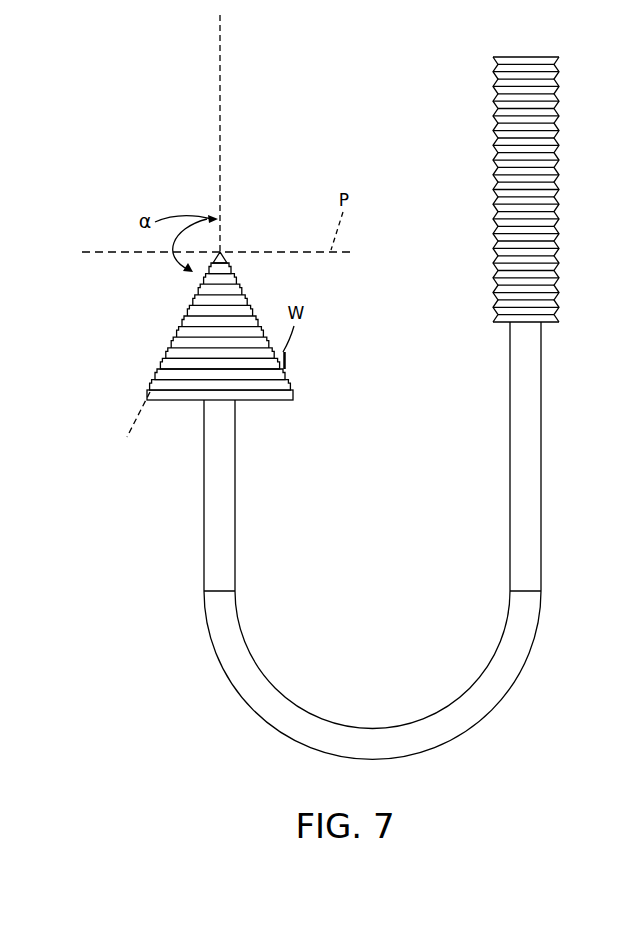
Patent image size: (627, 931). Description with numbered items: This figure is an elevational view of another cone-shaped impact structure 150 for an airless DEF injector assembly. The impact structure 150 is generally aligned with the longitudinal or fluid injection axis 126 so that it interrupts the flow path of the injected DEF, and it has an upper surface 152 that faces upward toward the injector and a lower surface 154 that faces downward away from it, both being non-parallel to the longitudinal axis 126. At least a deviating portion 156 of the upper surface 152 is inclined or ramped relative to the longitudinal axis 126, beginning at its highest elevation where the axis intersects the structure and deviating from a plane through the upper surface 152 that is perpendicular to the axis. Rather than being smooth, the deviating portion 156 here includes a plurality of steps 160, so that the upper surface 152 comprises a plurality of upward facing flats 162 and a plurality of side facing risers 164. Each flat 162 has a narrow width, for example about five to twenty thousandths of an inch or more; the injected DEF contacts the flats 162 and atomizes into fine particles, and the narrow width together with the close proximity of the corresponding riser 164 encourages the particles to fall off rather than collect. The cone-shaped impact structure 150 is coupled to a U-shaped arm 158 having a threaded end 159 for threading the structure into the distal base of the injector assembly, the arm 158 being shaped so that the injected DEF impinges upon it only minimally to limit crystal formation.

The longitudinal axis 126 is at (222, 55).
The upper surface 152 is at (232, 272).
The steps 160 is at (265, 322).
The deviating portion 156 is at (148, 331).
The side facing risers 164 is at (156, 369).
The impact structure 150 is at (198, 367).
The upward facing flats 162 is at (290, 388).
The lower surface 154 is at (267, 402).
The U-shaped arm 158 is at (506, 678).
The threaded end 159 is at (555, 128).